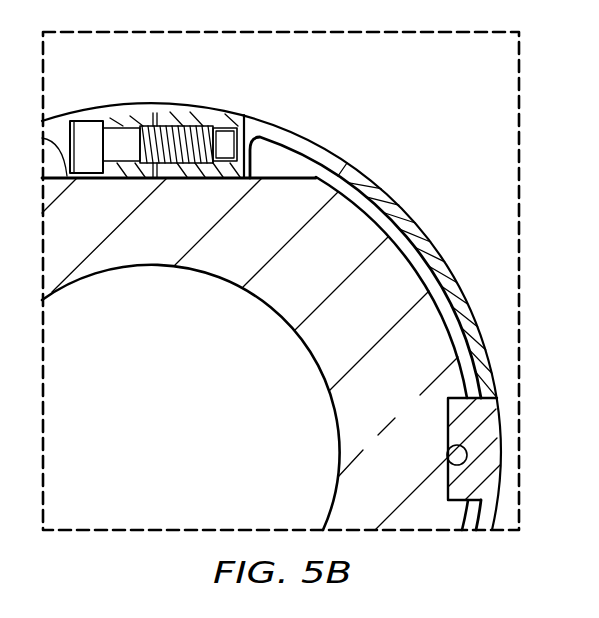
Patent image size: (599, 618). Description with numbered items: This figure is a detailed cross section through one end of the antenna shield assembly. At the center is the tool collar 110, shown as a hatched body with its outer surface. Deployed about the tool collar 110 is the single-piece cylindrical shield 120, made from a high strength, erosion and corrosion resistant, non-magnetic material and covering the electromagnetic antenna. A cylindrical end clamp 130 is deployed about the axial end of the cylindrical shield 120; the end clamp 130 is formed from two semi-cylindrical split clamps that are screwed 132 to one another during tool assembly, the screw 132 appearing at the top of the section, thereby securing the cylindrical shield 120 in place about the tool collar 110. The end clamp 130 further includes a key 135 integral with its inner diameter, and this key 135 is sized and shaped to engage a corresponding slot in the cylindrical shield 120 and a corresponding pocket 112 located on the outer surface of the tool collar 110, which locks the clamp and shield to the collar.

The tool collar 110 is at (155, 252).
The pocket 112 is at (453, 467).
The cylindrical shield 120 is at (426, 278).
The cylindrical end clamp 130 is at (393, 198).
The screw 132 is at (124, 138).
The key 135 is at (460, 425).